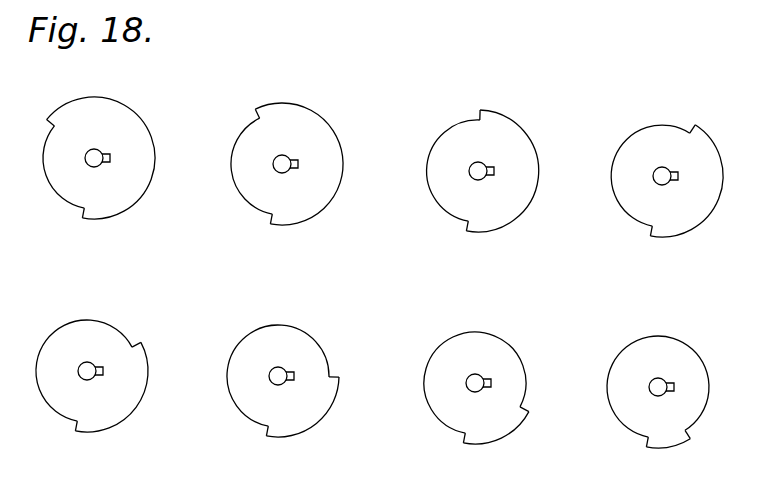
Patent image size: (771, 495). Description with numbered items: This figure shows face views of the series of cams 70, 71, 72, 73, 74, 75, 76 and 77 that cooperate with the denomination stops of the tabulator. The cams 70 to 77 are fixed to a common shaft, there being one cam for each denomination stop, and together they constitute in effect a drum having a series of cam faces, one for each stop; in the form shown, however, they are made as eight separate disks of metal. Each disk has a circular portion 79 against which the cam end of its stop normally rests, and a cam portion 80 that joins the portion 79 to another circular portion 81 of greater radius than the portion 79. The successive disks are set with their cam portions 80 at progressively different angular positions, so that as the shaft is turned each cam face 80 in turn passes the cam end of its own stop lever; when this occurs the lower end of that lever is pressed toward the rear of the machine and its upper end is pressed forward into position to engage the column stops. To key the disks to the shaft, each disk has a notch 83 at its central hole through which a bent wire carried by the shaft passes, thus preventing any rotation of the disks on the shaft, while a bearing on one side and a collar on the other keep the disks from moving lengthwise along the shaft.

The cam 70 is at (101, 158).
The cam 71 is at (299, 164).
The cam 72 is at (502, 171).
The cam 73 is at (686, 181).
The cam 74 is at (111, 387).
The cam 75 is at (302, 402).
The cam 76 is at (496, 409).
The cam 77 is at (665, 413).
The circular portion 79 is at (53, 194).
The cam portion 80 is at (50, 124).
The circular portion 81 is at (155, 176).
The notch 83 is at (109, 157).